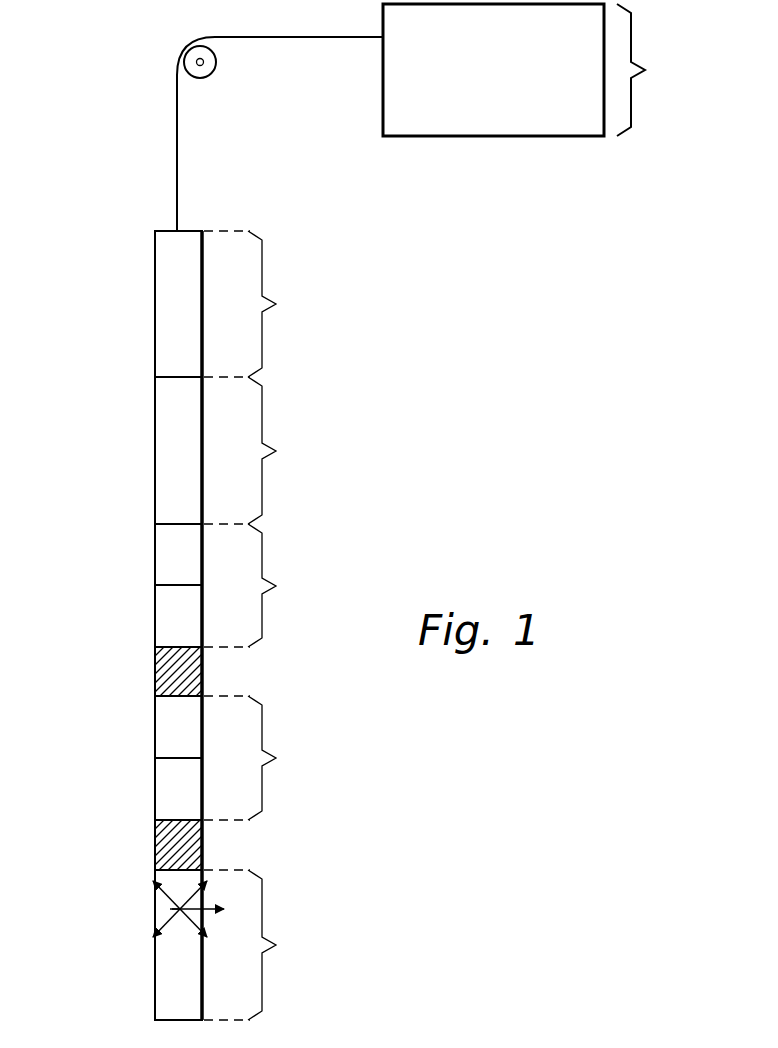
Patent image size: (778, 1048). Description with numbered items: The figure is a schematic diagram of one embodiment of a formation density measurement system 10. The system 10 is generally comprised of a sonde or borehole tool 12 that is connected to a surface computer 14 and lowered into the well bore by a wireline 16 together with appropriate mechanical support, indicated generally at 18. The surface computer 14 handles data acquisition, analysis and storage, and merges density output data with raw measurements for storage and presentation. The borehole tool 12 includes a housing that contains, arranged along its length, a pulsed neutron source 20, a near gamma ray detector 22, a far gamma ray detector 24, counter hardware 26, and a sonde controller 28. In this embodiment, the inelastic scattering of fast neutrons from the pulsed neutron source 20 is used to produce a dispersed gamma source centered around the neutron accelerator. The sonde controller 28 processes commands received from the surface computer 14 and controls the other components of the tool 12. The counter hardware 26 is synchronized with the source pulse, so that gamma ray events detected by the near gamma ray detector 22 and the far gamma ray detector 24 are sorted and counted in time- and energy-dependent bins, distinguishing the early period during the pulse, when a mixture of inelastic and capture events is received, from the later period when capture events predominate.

The formation density measurement system 10 is at (406, 256).
The borehole tool 12 is at (146, 690).
The surface computer 14 is at (532, 70).
The wireline 16 is at (310, 38).
The mechanical support 18 is at (216, 65).
The pulsed neutron source 20 is at (233, 945).
The near gamma ray detector 22 is at (281, 758).
The far gamma ray detector 24 is at (280, 585).
The counter hardware 26 is at (280, 450).
The sonde controller 28 is at (280, 304).